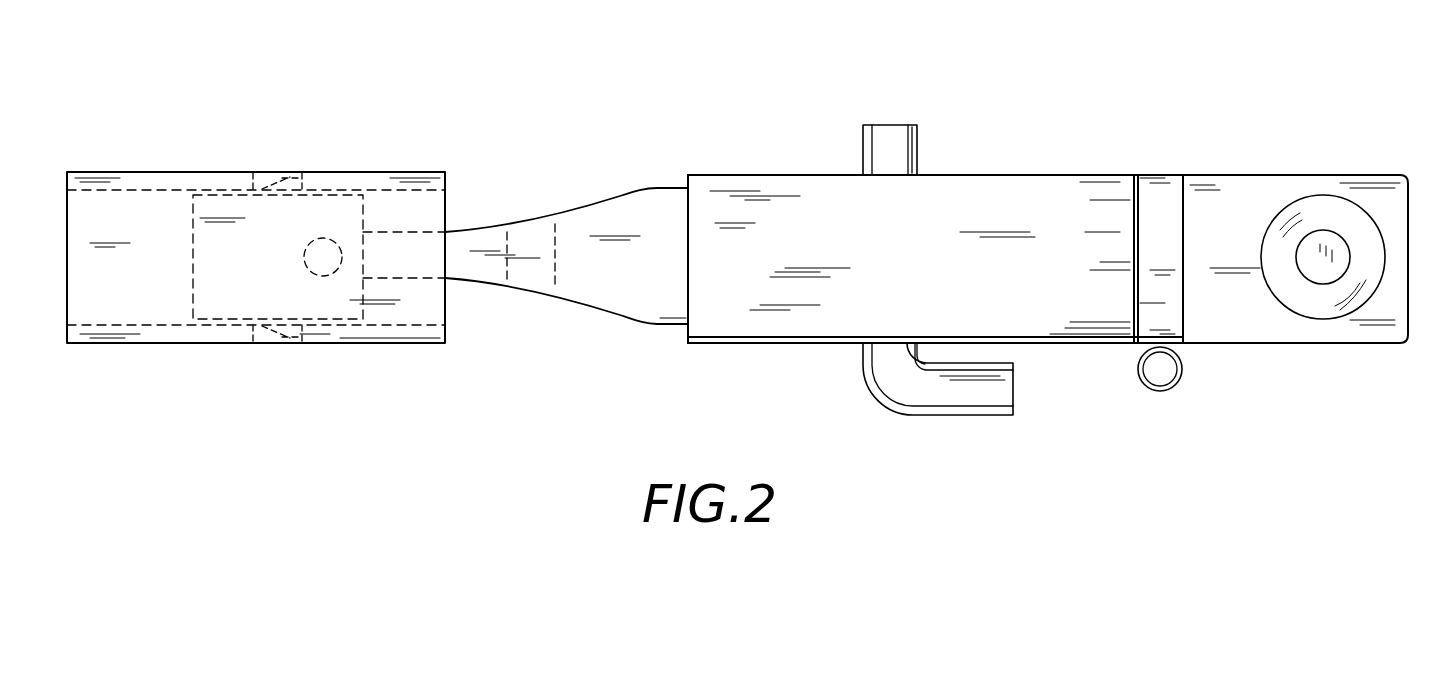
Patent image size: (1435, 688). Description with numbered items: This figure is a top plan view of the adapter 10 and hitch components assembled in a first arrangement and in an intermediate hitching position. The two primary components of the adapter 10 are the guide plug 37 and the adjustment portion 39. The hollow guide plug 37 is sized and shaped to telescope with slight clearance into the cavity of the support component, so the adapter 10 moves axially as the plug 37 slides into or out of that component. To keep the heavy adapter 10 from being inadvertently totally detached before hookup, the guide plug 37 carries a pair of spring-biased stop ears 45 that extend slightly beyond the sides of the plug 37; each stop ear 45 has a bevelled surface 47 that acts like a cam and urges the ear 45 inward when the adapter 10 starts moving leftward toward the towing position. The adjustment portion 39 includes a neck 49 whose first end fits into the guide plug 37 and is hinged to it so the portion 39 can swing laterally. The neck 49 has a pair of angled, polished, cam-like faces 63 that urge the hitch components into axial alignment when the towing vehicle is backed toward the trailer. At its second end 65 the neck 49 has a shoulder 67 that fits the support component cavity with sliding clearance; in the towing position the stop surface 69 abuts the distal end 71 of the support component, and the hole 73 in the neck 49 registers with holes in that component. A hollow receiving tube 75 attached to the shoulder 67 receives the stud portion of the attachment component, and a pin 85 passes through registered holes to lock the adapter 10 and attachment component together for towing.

The adapter 10 is at (528, 137).
The guide plug 37 is at (345, 195).
The stop ear 45 is at (290, 173).
The bevelled surface 47 is at (268, 343).
The distal end 71 is at (445, 174).
The neck 49 is at (595, 210).
The hole 73 is at (527, 288).
The cam-like face 63 is at (570, 298).
The shoulder 67 is at (660, 327).
The second end 65 is at (682, 326).
The stop surface 69 is at (689, 174).
The adjustment portion 39 is at (720, 175).
The pin 85 is at (887, 124).
The receiving tube 75 is at (1030, 174).